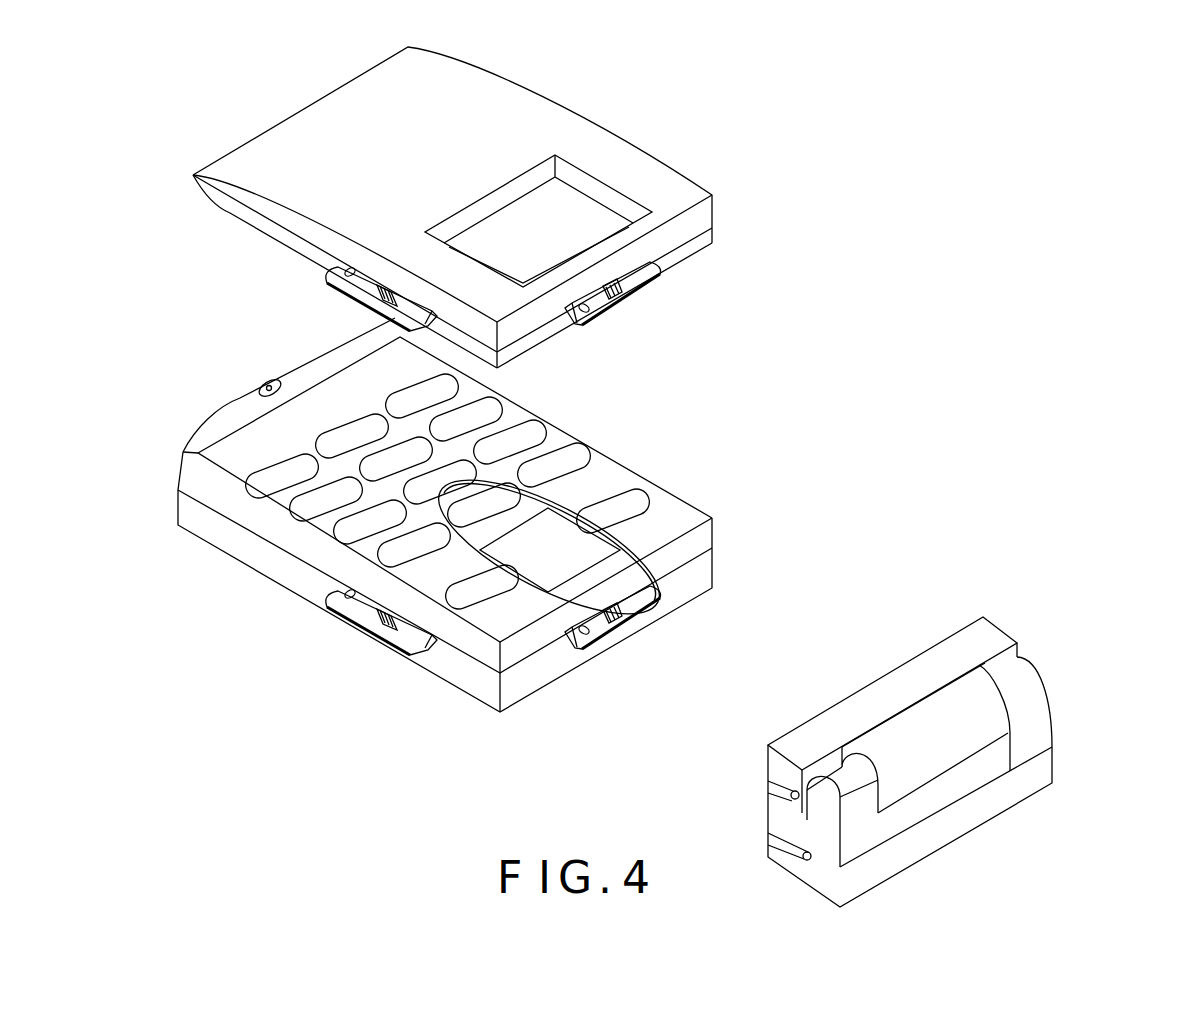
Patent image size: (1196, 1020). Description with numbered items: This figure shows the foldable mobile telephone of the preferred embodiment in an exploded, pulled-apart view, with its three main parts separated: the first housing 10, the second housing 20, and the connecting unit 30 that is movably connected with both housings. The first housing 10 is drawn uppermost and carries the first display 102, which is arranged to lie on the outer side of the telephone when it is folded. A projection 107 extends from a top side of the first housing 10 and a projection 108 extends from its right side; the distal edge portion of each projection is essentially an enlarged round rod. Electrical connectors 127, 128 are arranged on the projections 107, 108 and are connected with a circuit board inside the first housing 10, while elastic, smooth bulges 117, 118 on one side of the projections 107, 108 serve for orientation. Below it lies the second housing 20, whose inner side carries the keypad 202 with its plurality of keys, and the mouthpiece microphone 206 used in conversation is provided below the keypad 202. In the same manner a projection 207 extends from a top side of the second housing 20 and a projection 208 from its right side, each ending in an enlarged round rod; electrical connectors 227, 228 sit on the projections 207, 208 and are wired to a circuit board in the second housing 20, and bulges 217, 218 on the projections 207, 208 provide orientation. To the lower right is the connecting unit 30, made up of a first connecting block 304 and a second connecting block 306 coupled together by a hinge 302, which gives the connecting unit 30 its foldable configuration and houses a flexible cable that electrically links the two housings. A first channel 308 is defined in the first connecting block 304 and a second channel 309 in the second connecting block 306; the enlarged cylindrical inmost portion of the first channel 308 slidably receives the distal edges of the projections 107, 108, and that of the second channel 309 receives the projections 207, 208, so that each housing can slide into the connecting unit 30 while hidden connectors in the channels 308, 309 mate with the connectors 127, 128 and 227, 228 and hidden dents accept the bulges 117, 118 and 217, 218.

The first housing 10 is at (520, 66).
The first display 102 is at (563, 223).
The projection 107 is at (657, 273).
The projection 108 is at (347, 287).
The bulge 117 is at (581, 318).
The bulge 118 is at (341, 273).
The electrical connector 127 is at (619, 292).
The electrical connector 128 is at (388, 302).
The second housing 20 is at (698, 494).
The keypad 202 is at (268, 482).
The mouthpiece microphone 206 is at (268, 385).
The projection 207 is at (655, 612).
The projection 208 is at (403, 626).
The bulge 217 is at (600, 636).
The bulge 218 is at (333, 591).
The electrical connector 227 is at (622, 607).
The electrical connector 228 is at (382, 620).
The connecting unit 30 is at (1057, 702).
The hinge 302 is at (975, 723).
The first connecting block 304 is at (987, 633).
The second connecting block 306 is at (823, 830).
The first channel 308 is at (768, 796).
The second channel 309 is at (770, 851).